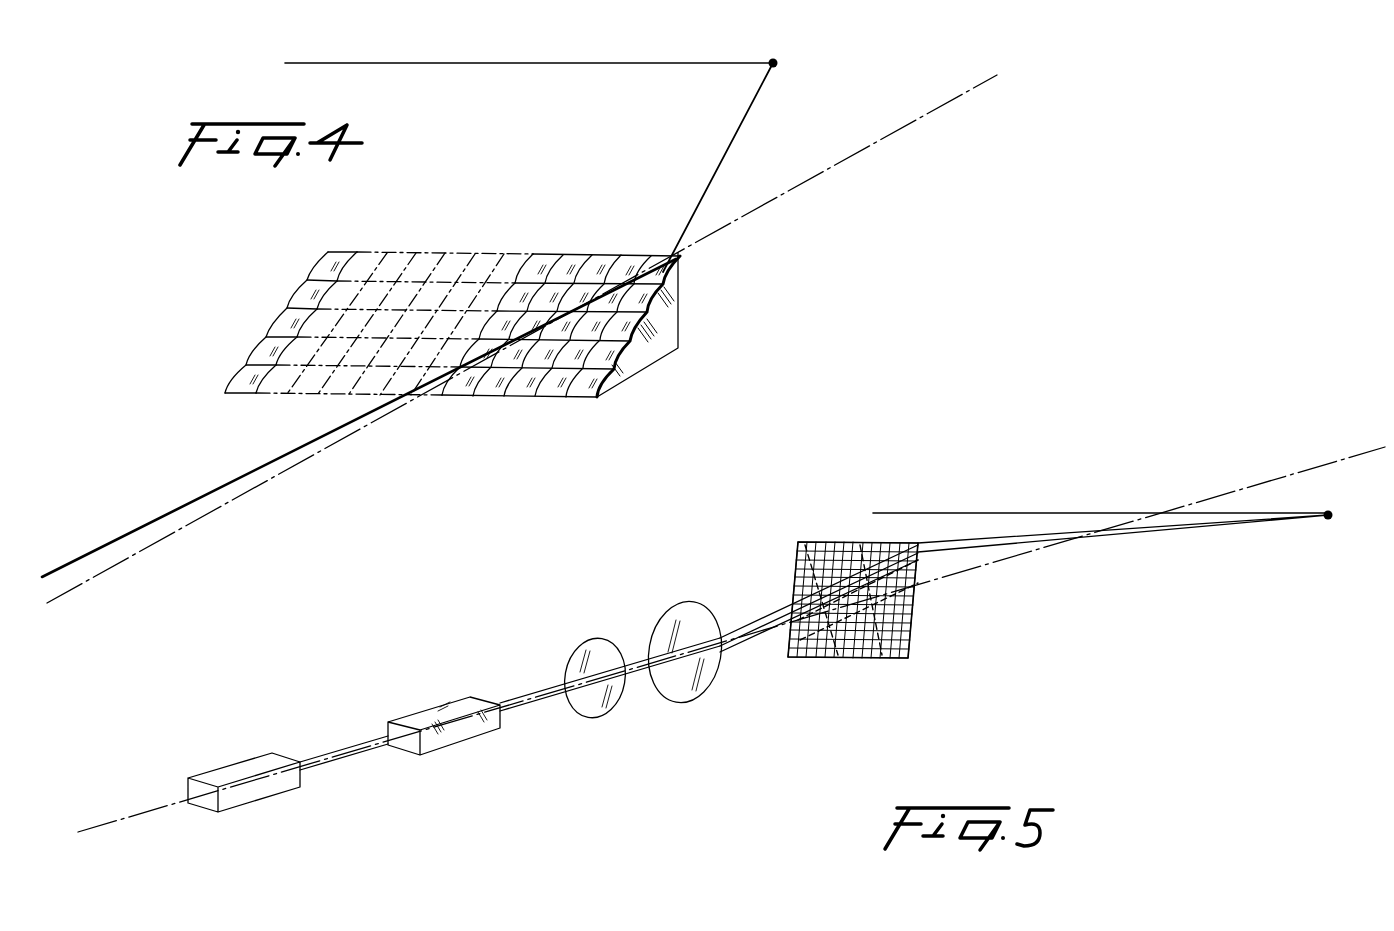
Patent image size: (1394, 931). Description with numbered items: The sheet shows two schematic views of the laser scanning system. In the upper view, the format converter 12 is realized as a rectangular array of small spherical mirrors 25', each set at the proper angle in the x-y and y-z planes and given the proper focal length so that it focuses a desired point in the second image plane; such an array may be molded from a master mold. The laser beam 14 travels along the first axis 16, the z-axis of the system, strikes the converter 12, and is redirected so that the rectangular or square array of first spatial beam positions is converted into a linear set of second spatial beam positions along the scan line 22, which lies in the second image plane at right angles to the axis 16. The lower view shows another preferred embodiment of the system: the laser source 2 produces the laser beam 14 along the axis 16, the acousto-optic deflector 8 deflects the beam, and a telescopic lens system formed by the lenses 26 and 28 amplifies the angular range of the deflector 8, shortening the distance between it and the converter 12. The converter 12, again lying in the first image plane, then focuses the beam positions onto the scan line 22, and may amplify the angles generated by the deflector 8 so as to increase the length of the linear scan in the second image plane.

In FIG. 5, the laser source 2 is at (257, 797).
In FIG. 5, the acousto-optic deflector 8 is at (458, 735).
In FIG. 4, the format converter 12 is at (673, 308).
In FIG. 5, the format converter 12 is at (912, 612).
In FIG. 4, the laser beam 14 is at (172, 515).
In FIG. 4, the first axis 16 is at (930, 112).
In FIG. 5, the first axis 16 is at (113, 825).
In FIG. 4, the scan line 22 is at (588, 62).
In FIG. 5, the scan line 22 is at (957, 516).
In FIG. 4, the small spherical mirror 25' is at (662, 398).
In FIG. 5, the lens 26 is at (575, 653).
In FIG. 5, the lens 28 is at (677, 603).